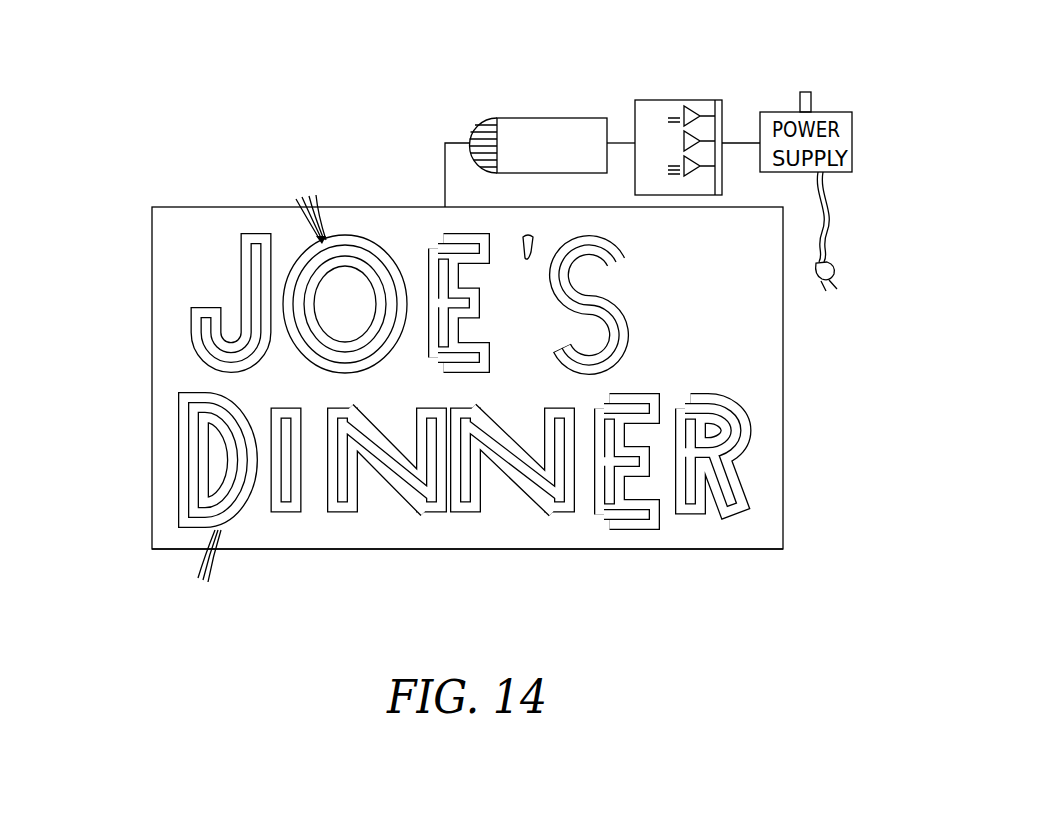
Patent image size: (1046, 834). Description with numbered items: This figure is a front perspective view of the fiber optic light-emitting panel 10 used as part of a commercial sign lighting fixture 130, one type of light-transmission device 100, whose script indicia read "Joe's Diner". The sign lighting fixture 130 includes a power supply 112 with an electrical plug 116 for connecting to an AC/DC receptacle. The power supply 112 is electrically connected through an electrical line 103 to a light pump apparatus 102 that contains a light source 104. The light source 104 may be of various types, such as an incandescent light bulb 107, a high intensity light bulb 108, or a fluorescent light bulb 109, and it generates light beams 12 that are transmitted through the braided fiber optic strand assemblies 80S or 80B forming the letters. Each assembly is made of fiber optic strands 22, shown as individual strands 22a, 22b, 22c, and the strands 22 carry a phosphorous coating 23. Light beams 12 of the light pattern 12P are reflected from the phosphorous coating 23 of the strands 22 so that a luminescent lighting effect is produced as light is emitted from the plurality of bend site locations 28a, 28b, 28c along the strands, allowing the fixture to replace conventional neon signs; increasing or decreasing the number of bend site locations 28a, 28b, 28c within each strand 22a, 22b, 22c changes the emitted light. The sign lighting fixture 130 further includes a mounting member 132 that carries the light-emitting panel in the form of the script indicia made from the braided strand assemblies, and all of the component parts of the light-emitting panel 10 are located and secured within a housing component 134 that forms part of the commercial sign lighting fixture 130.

The fiber optic light-emitting panel 10 is at (108, 253).
The light beams 12 is at (670, 115).
The light pattern 12P is at (308, 215).
The fiber optic strands 22 is at (344, 240).
The fiber optic strand 22a is at (354, 254).
The fiber optic strand 22b is at (354, 254).
The fiber optic strand 22c is at (358, 250).
The phosphorous coating 23 is at (612, 287).
The bend site location 28a is at (354, 254).
The bend site location 28b is at (354, 254).
The bend site location 28c is at (354, 254).
The fiber optic strand assembly 80S is at (150, 295).
The fiber optic strand assembly 80B is at (200, 300).
The light-transmission device 100 is at (135, 411).
The light pump apparatus 102 is at (532, 118).
The electrical line 103 is at (740, 143).
The light source 104 is at (684, 135).
The incandescent light bulb 107 is at (772, 102).
The high intensity light bulb 108 is at (772, 102).
The fluorescent light bulb 109 is at (688, 163).
The power supply 112 is at (824, 175).
The electrical plug 116 is at (818, 240).
The commercial sign lighting fixture 130 is at (762, 250).
The mounting member 132 is at (228, 233).
The housing component 134 is at (604, 556).